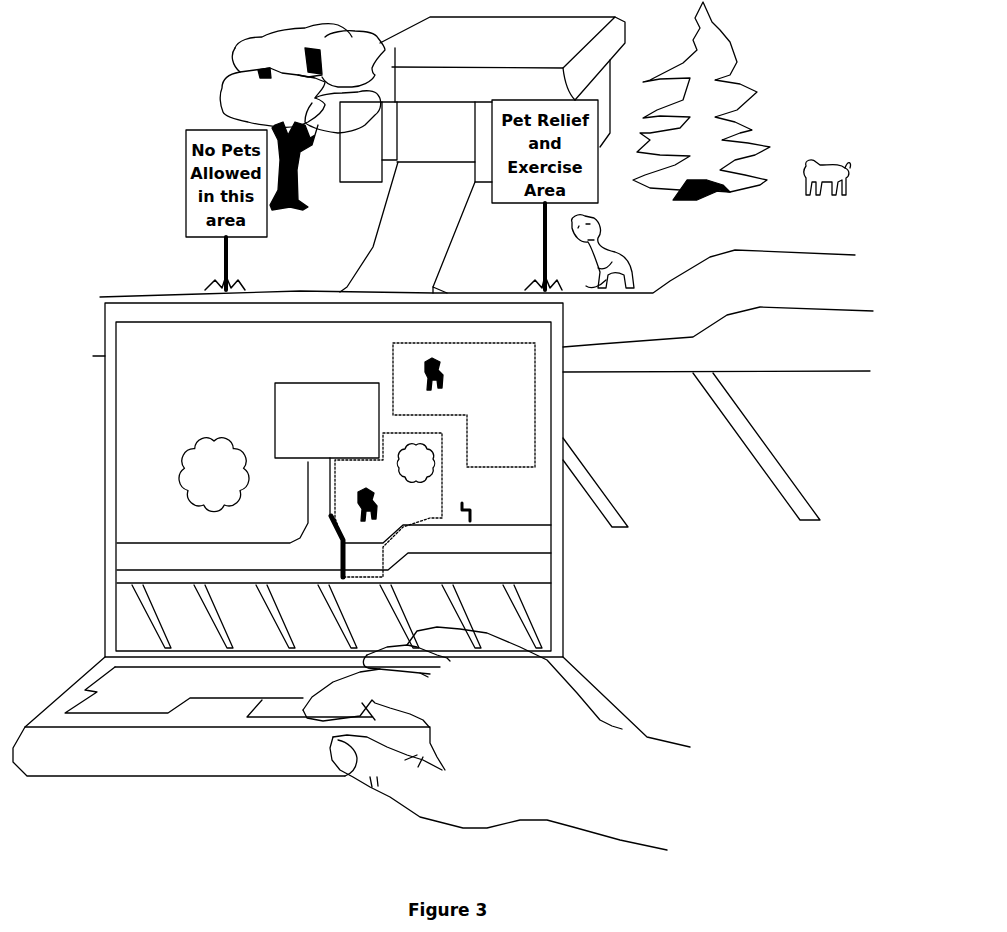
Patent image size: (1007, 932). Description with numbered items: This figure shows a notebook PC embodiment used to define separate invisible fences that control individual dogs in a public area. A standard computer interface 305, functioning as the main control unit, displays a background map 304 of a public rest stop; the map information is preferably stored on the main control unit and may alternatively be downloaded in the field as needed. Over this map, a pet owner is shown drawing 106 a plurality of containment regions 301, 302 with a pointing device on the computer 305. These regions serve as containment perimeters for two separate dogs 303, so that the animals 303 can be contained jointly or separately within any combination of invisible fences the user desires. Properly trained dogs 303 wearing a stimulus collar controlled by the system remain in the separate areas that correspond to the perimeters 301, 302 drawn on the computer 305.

The drawing 106 is at (333, 548).
The containment region 301 is at (418, 332).
The containment region 302 is at (326, 492).
The animals 303 is at (397, 499).
The background map 304 is at (472, 510).
The standard computer interface 305 is at (598, 661).